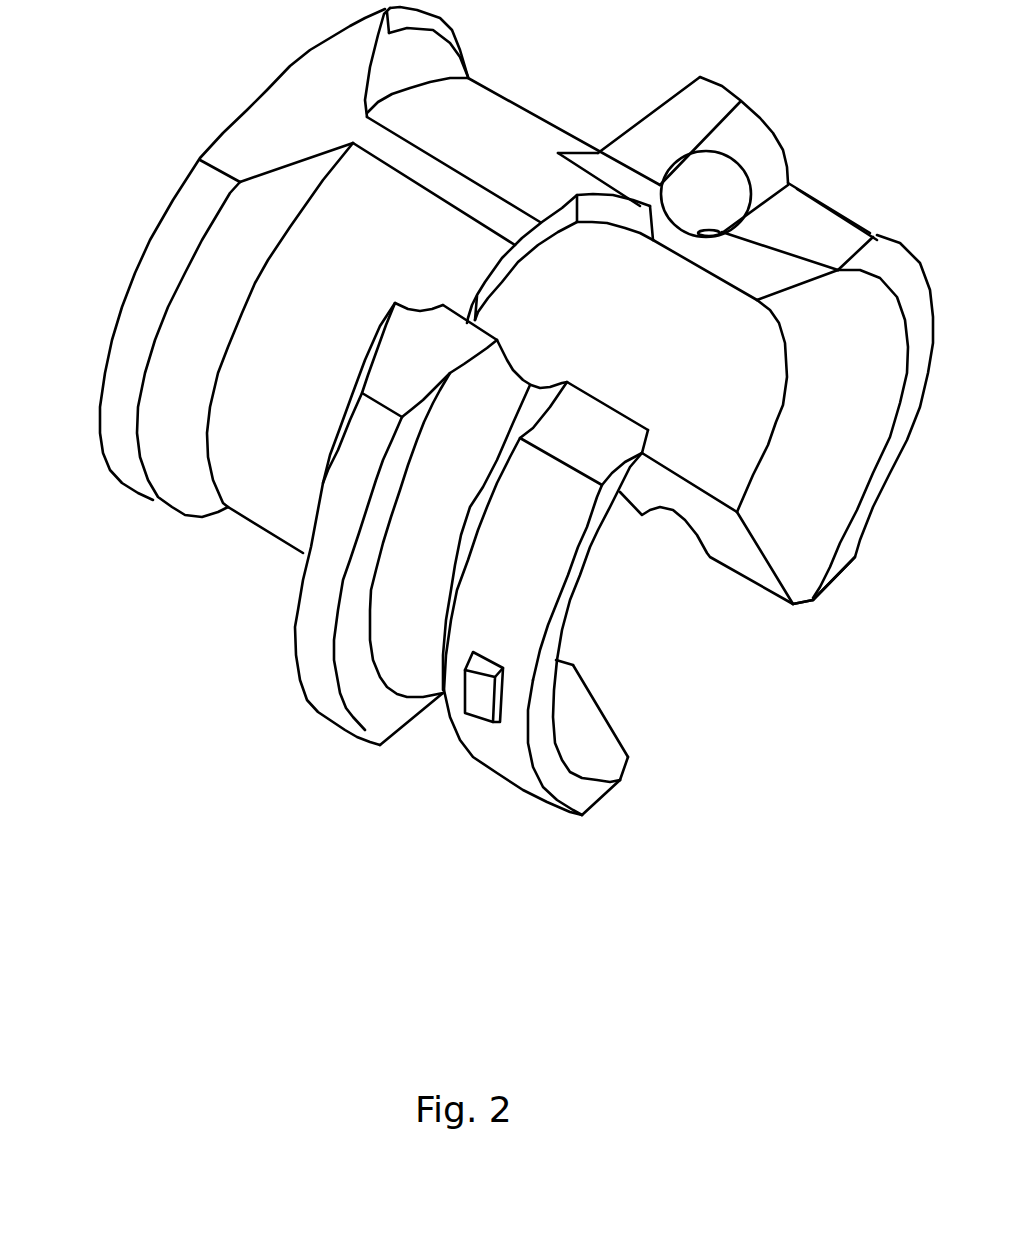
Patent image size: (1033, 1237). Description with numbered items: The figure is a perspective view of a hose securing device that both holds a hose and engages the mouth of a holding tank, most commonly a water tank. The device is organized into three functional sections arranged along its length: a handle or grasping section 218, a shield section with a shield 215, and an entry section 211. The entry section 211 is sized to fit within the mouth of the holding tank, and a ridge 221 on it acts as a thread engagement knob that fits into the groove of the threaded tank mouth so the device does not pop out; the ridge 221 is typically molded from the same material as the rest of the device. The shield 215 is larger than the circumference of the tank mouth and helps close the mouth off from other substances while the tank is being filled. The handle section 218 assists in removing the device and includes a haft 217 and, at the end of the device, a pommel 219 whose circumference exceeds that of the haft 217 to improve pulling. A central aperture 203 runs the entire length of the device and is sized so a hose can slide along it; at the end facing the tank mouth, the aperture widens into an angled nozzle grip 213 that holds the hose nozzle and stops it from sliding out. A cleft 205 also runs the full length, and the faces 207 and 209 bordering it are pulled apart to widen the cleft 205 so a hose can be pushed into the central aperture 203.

The central aperture 203 is at (688, 383).
The cleft 205 is at (555, 536).
The face 207 is at (706, 538).
The face 209 is at (610, 737).
The entry section 211 is at (532, 753).
The nozzle grip 213 is at (812, 612).
The shield 215 is at (389, 532).
The haft 217 is at (280, 358).
The handle or grasping section 218 is at (501, 129).
The pommel 219 is at (211, 263).
The ridge 221 is at (470, 741).